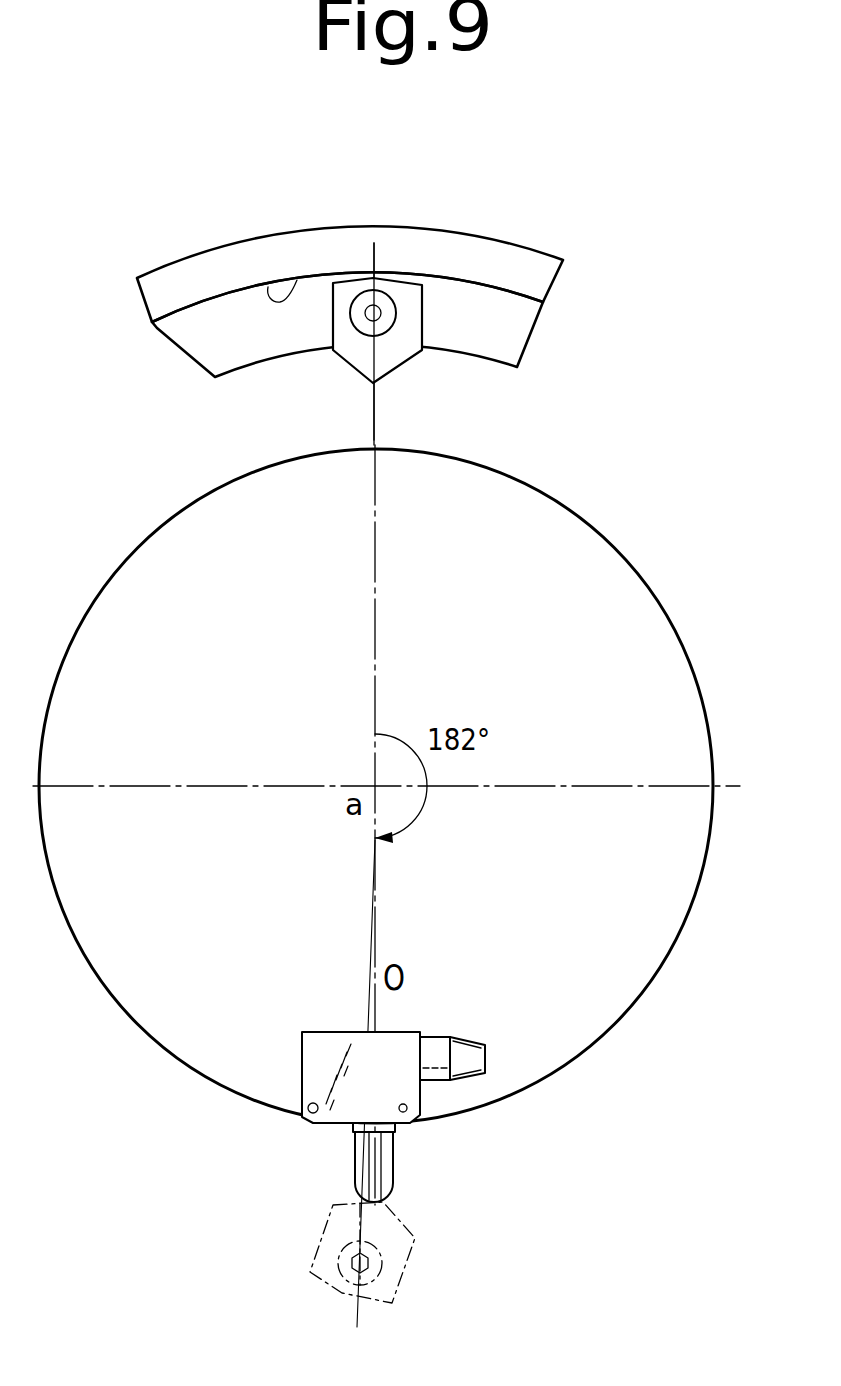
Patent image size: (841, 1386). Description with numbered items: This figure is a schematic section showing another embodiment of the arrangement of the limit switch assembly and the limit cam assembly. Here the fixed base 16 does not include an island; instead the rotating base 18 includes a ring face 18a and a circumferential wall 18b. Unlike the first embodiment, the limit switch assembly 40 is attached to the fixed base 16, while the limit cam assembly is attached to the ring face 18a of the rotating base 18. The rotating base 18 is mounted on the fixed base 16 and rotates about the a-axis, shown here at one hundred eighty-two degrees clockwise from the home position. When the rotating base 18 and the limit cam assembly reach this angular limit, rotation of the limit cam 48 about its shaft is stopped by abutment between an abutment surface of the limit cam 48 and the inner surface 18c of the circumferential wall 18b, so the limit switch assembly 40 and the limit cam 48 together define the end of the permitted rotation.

The fixed base 16 is at (623, 557).
The rotating base 18 is at (323, 274).
The ring face 18a is at (193, 340).
The circumferential wall 18b is at (477, 247).
The inner surface 18c is at (297, 280).
The limit switch assembly 40 is at (270, 1057).
The limit cam 48 is at (423, 365).